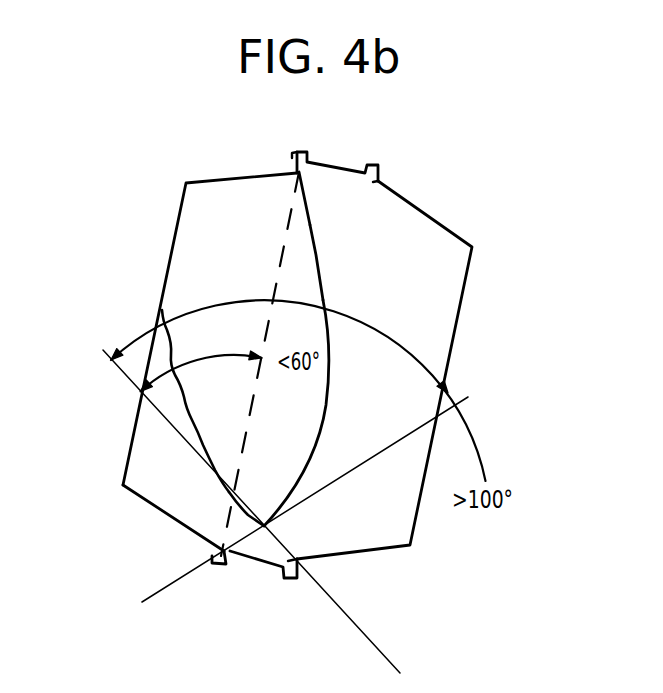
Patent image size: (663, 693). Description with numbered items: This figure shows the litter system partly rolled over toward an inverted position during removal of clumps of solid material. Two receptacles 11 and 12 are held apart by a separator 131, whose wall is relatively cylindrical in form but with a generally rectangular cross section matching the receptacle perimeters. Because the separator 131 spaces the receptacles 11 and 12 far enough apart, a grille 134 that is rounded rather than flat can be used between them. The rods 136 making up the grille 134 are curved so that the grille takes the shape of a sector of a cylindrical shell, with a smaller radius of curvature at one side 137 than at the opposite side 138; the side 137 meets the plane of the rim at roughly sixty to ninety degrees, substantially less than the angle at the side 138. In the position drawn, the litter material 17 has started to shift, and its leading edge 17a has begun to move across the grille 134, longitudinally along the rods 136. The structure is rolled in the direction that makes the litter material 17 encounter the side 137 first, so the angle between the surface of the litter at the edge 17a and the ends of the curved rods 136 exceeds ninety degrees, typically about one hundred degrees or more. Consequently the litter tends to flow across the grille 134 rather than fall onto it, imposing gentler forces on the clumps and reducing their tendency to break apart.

The receptacle 11 is at (228, 177).
The receptacle 12 is at (450, 230).
The separator 131 is at (347, 172).
The side of the shell 137 is at (237, 540).
The opposite side of the shell 138 is at (310, 197).
The grille 134 is at (323, 274).
The rods 136 is at (325, 427).
The litter material 17 is at (190, 415).
The leading edge 17a is at (258, 518).